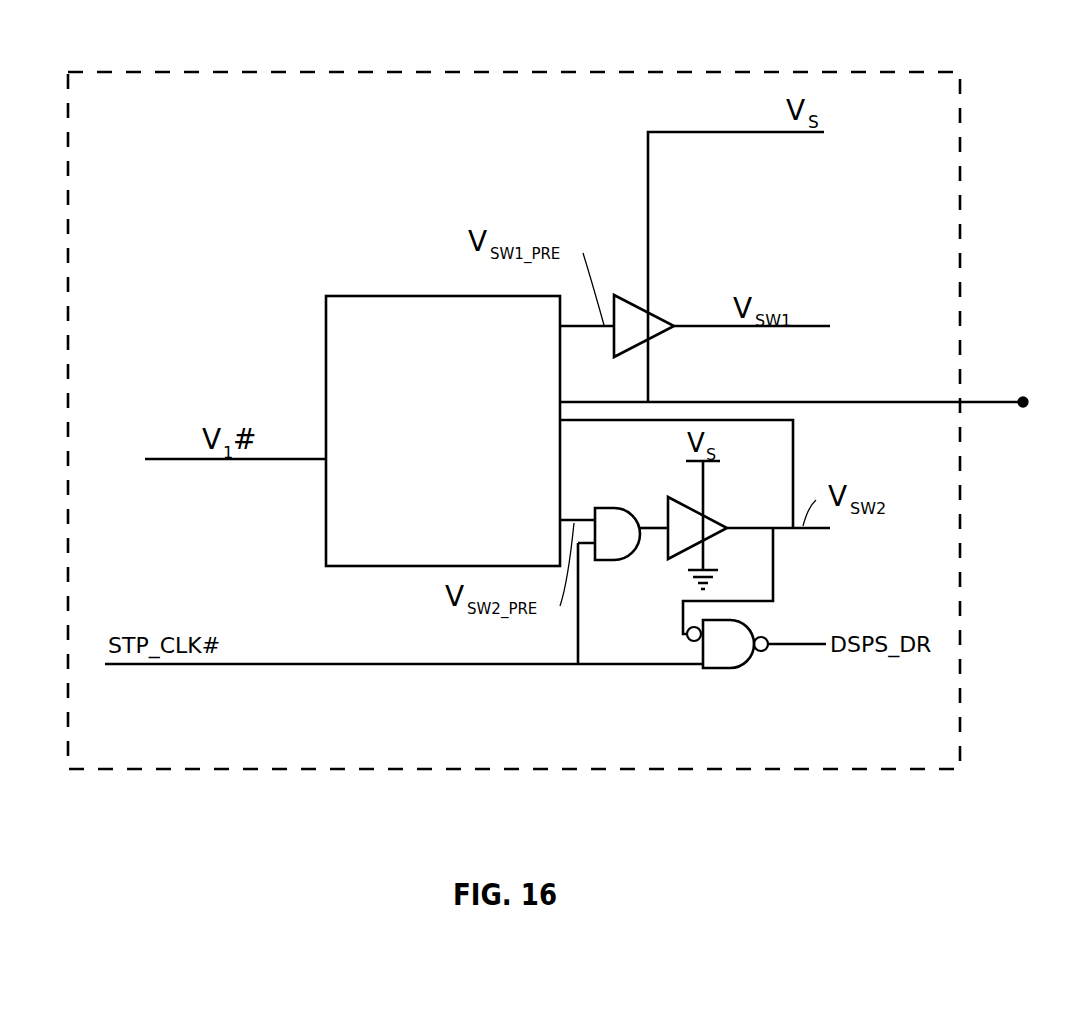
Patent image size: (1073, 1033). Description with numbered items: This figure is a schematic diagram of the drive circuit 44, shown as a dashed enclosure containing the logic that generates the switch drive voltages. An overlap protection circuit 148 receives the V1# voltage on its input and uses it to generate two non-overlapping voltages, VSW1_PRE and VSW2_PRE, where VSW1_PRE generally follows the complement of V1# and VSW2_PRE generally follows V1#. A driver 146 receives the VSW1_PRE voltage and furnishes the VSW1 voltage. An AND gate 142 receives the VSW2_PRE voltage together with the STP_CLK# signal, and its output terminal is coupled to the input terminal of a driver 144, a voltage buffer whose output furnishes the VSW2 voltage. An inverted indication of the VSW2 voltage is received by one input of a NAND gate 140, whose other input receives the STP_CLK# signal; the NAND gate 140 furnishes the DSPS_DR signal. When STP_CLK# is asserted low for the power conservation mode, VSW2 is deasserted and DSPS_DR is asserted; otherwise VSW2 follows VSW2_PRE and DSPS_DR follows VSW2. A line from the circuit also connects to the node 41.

The drive circuit 44 is at (937, 72).
The node 41 is at (1022, 407).
The NAND gate 140 is at (731, 668).
The AND gate 142 is at (603, 507).
The driver 144 is at (712, 516).
The driver 146 is at (657, 318).
The overlap protection circuit 148 is at (326, 531).